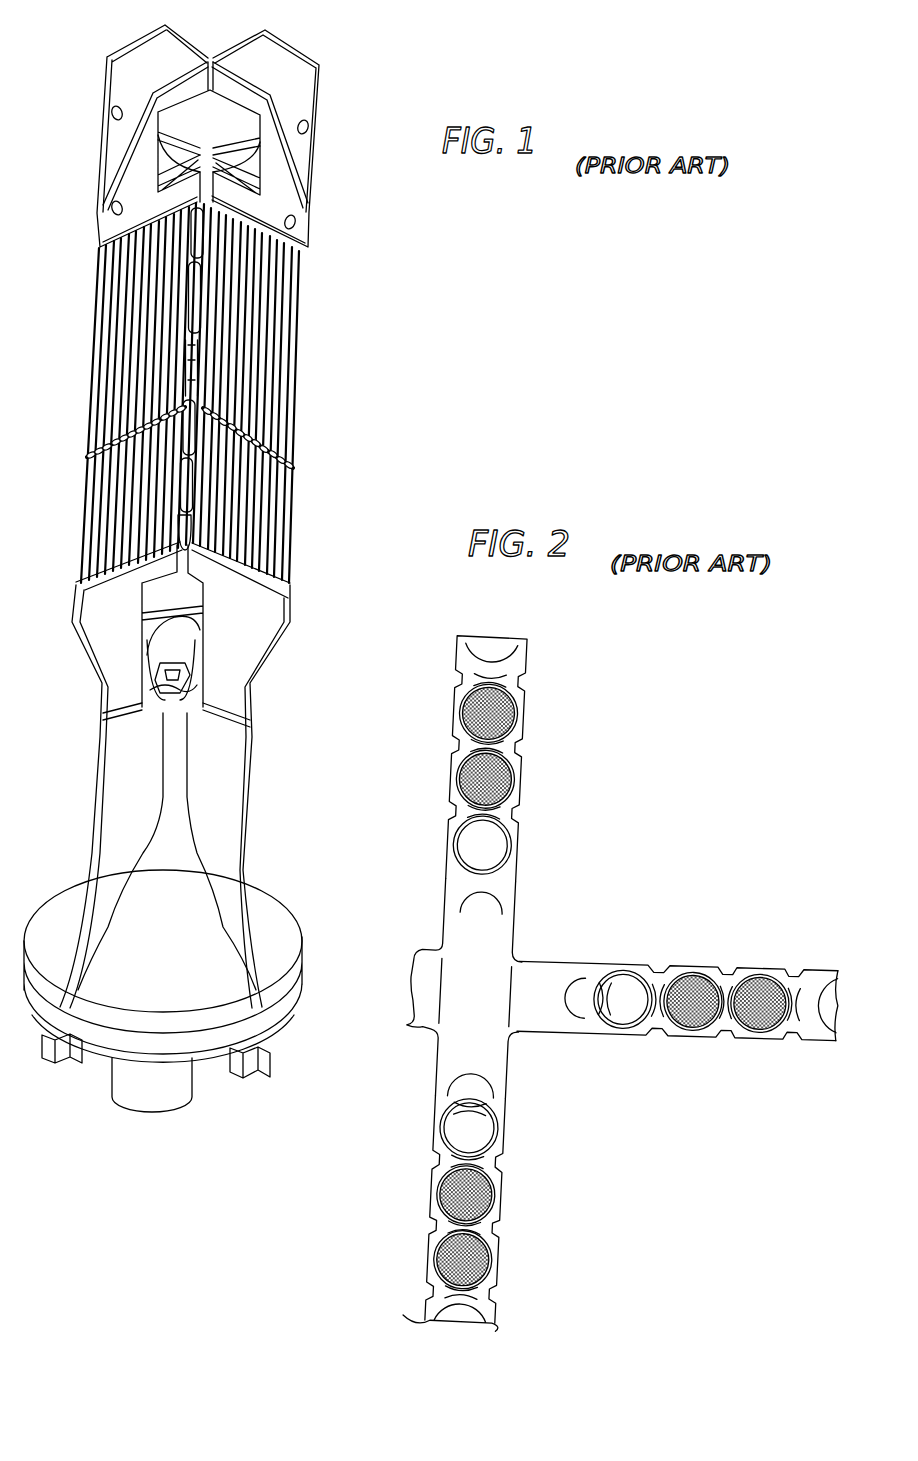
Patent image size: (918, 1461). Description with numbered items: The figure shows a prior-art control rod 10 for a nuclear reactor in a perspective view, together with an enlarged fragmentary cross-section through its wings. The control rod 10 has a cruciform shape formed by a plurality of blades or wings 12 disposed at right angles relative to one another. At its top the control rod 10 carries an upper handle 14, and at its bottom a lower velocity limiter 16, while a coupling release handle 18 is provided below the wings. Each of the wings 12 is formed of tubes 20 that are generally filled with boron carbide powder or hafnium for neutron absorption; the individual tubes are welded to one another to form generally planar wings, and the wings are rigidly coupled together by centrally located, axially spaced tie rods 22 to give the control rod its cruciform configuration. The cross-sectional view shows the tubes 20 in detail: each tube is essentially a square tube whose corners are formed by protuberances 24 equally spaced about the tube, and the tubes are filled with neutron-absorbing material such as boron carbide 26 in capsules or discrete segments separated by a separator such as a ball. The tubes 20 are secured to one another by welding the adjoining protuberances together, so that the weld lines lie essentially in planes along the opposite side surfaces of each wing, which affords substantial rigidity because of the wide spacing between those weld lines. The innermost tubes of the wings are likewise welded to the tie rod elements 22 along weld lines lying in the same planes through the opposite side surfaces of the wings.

In FIG. 1, the control rod 10 is at (358, 437).
In FIG. 1, the wings 12 is at (203, 338).
In FIG. 1, the upper handle 14 is at (211, 57).
In FIG. 1, the lower velocity limiter 16 is at (288, 988).
In FIG. 1, the coupling release handle 18 is at (160, 623).
In FIG. 1, the tubes 20 is at (273, 513).
In FIG. 2, the tubes 20 is at (456, 832).
In FIG. 1, the tie rods 22 is at (203, 342).
In FIG. 2, the tie rods 22 is at (462, 937).
In FIG. 2, the protuberances 24 is at (640, 1030).
In FIG. 2, the boron carbide 26 is at (697, 1012).